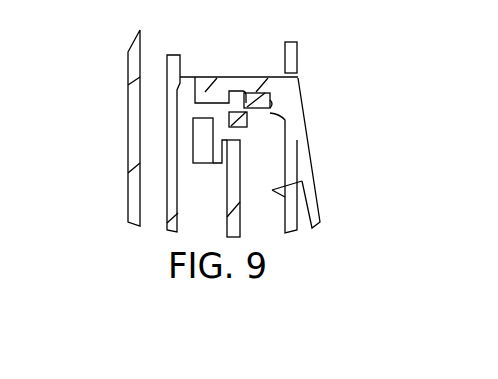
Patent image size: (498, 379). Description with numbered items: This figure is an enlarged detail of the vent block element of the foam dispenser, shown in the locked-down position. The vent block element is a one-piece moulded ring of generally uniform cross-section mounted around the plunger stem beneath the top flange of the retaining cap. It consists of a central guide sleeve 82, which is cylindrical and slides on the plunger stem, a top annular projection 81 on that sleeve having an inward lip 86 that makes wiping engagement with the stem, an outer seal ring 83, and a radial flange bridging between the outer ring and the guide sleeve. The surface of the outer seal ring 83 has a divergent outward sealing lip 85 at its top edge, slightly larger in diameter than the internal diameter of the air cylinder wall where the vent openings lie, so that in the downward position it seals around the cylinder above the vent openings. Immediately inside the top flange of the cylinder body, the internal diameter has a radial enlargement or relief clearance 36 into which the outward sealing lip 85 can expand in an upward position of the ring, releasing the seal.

The relief clearance 36 is at (226, 110).
The top annular projection 81 is at (180, 78).
The central guide sleeve 82 is at (190, 133).
The outer seal ring 83 is at (222, 137).
The outward sealing lip 85 is at (245, 108).
The inward lip 86 is at (180, 78).